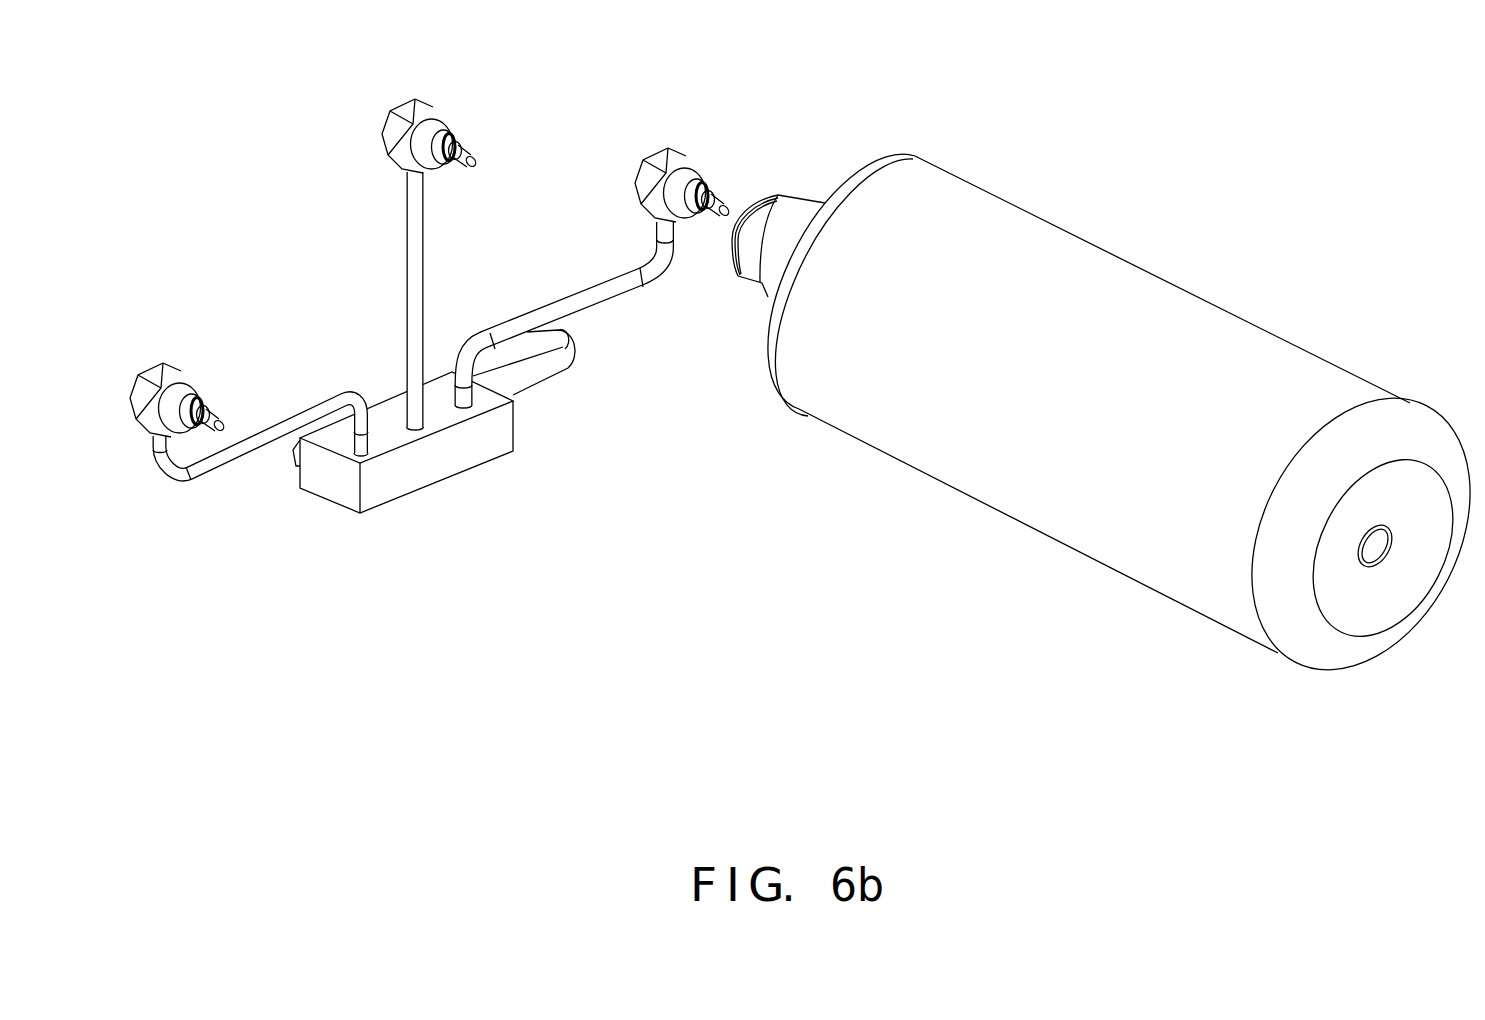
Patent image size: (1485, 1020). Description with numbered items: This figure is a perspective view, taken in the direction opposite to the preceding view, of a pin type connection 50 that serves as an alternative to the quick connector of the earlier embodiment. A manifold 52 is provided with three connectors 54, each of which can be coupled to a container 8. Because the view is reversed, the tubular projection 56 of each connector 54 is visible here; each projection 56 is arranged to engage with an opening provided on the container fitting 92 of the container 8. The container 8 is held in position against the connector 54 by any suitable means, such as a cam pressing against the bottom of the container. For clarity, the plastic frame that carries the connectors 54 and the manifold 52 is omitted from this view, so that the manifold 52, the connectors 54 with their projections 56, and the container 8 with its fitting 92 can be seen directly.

The container 8 is at (1223, 333).
The pin type connection 50 is at (775, 132).
The manifold 52 is at (328, 485).
The connector 54 is at (431, 100).
The tubular projection 56 is at (468, 153).
The container fitting 92 is at (748, 293).